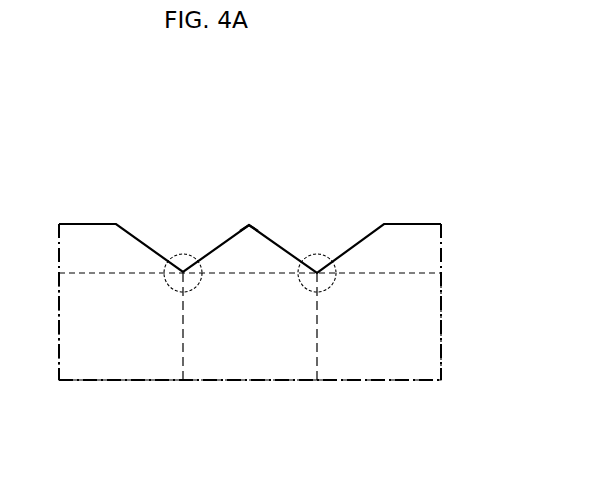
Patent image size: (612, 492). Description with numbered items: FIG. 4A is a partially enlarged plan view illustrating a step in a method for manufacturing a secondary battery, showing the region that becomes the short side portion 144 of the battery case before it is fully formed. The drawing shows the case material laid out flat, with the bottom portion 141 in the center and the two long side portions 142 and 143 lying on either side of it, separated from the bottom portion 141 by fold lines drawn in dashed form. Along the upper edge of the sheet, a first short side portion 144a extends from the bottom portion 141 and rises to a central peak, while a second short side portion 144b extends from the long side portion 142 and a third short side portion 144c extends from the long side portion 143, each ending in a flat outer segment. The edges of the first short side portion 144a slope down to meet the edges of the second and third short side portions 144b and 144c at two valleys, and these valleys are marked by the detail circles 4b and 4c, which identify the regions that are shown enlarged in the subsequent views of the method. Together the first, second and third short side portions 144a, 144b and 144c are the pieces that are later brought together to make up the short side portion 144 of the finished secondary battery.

The short side portion 144 is at (357, 158).
The first short side portion 144a is at (249, 225).
The second short side portion 144b is at (415, 230).
The third short side portion 144c is at (83, 230).
The right valley region (detail circle) 4b is at (316, 253).
The left valley region (detail circle) 4c is at (181, 253).
The bottom portion 141 is at (262, 372).
The long side portion 142 is at (386, 372).
The long side portion 143 is at (117, 372).